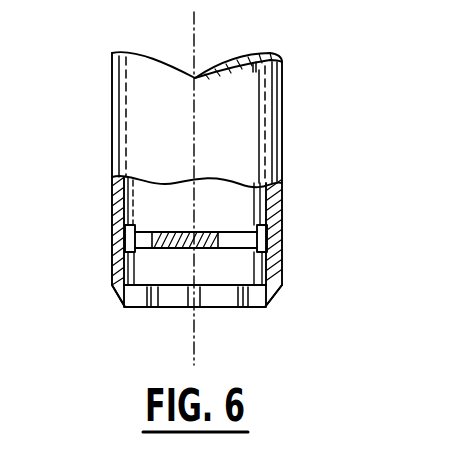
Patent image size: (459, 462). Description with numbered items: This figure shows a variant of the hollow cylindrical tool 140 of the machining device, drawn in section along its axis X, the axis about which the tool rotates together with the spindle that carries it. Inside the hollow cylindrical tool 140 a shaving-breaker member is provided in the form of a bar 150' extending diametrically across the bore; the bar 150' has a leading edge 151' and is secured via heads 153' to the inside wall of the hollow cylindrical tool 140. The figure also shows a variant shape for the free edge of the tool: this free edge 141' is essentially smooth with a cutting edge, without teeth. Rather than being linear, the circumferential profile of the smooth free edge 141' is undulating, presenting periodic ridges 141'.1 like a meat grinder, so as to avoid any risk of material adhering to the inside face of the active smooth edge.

The hollow cylindrical tool 140 is at (108, 90).
The bar 150' is at (200, 189).
The leading edge 151' is at (196, 257).
The heads 153' is at (199, 219).
The free edge 141' is at (172, 316).
The periodic ridges 141'.1 is at (205, 326).
The axis X is at (195, 100).